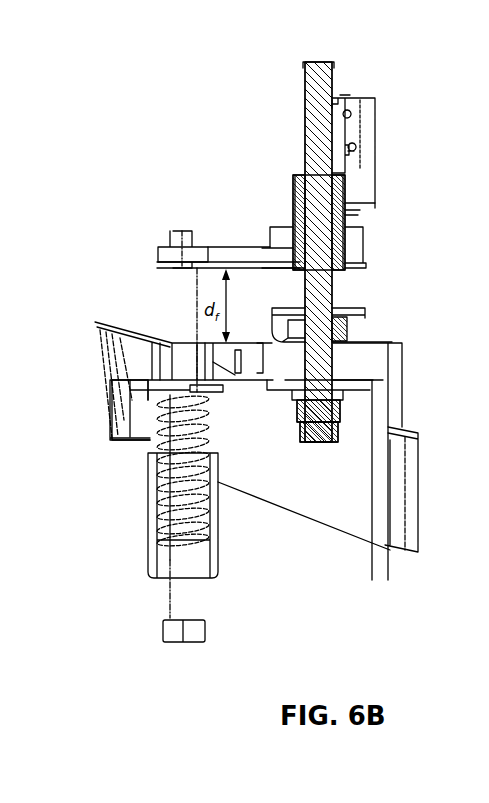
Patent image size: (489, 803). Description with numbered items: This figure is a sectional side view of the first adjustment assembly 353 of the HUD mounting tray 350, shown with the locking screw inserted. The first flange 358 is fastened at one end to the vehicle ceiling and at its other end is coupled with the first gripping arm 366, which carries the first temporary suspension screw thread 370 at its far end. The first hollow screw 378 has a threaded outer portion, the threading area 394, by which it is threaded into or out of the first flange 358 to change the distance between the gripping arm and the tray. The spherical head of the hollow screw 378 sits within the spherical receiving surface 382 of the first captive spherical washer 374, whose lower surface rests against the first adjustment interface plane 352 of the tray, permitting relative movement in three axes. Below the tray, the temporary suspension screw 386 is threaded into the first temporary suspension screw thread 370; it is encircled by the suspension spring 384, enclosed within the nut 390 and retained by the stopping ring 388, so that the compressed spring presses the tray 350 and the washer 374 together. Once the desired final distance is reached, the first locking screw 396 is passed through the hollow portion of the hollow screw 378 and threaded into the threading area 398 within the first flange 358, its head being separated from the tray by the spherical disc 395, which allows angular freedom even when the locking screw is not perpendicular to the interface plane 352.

The first adjustment assembly 353 is at (282, 46).
The threading area 398 is at (300, 106).
The first flange 358 is at (366, 122).
The first locking screw 396 is at (314, 158).
The threading area 394 is at (288, 178).
The first hollow screw 378 is at (341, 213).
The first gripping arm 366 is at (233, 262).
The first temporary suspension screw thread 370 is at (172, 237).
The receiving surface 382 is at (290, 330).
The first captive spherical washer 374 is at (358, 329).
The first adjustment interface plane 352 is at (382, 344).
The stopping ring 388 is at (143, 383).
The spherical disc 395 is at (303, 398).
The suspension spring 384 is at (178, 518).
The nut 390 is at (210, 557).
The temporary suspension screw 386 is at (175, 606).
The HUD mounting tray 350 is at (362, 524).